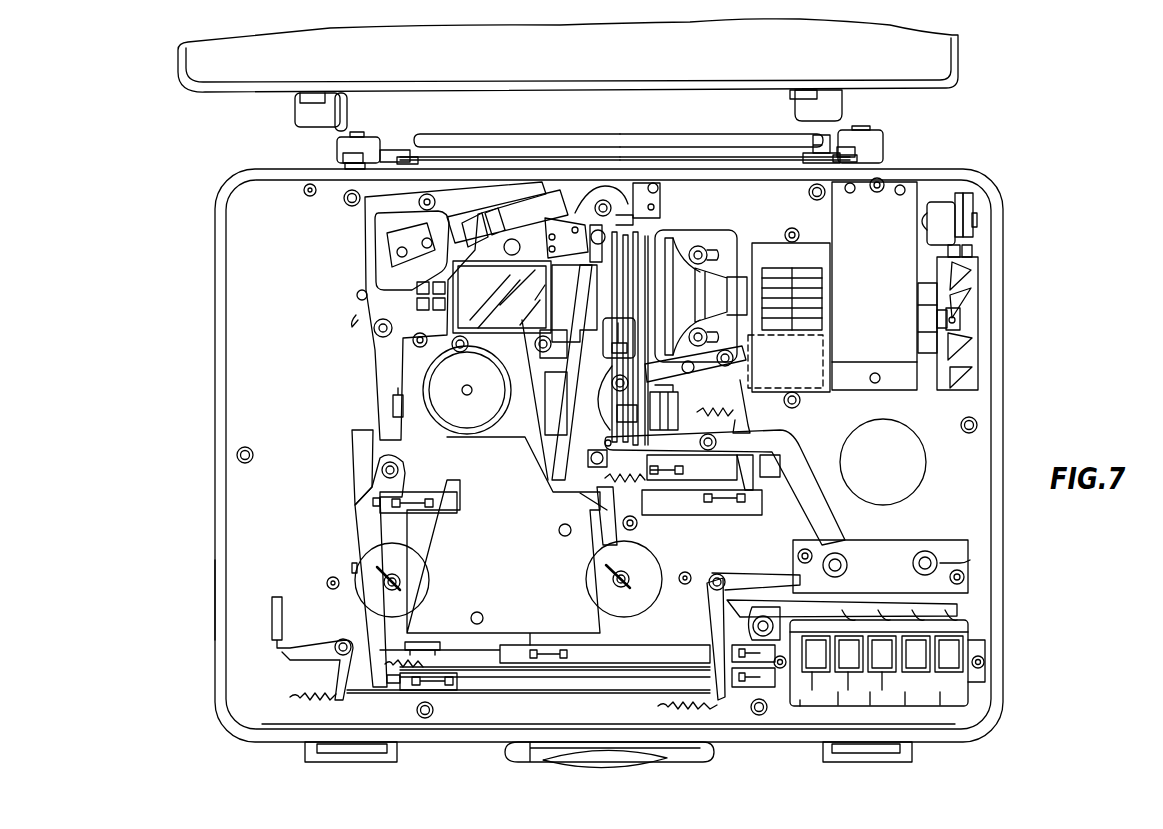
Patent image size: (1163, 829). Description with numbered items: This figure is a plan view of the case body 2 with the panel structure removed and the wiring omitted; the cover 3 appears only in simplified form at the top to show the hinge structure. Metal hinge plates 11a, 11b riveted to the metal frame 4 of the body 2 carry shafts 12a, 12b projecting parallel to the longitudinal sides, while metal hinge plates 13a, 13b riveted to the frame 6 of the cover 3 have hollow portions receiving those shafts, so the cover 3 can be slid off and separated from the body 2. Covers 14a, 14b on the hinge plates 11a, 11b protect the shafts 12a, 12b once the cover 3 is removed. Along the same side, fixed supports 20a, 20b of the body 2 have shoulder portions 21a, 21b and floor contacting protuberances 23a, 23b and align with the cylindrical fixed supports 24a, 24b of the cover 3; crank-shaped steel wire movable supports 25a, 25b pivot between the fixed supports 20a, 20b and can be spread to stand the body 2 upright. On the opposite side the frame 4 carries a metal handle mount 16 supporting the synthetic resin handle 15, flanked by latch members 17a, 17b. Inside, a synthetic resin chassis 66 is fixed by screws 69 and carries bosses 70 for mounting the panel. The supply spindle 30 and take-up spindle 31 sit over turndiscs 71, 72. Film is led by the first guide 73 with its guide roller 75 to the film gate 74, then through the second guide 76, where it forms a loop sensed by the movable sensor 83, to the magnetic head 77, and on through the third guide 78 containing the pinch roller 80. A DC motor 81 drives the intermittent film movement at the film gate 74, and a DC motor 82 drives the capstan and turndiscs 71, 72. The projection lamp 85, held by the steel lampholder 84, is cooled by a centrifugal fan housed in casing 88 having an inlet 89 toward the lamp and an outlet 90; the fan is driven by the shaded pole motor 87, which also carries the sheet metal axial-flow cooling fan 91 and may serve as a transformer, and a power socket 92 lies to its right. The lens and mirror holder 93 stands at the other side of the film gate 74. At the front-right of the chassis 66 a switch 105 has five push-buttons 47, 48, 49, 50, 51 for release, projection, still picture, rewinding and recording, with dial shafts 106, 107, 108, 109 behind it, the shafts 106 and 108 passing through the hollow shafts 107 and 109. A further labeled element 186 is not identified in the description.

The body 2 is at (213, 418).
The cover 3 is at (176, 50).
The metal frame 4 is at (213, 598).
The frame 6 is at (203, 92).
The hinge plate 11a is at (408, 160).
The hinge plate 11b is at (842, 158).
The shaft 12a is at (346, 166).
The shaft 12b is at (858, 158).
The hinge plate 13a is at (312, 92).
The hinge plate 13b is at (797, 90).
The cover 14a is at (345, 157).
The cover 14b is at (850, 150).
The handle 15 is at (590, 769).
The handle mount 16 is at (654, 765).
The latch member 17a is at (372, 762).
The latch member 17b is at (886, 751).
The fixed support 20a is at (360, 138).
The fixed support 20b is at (860, 130).
The shoulder portion 21a is at (388, 155).
The shoulder portion 21b is at (822, 140).
The floor contacting protuberance 23a is at (363, 132).
The floor contacting protuberance 23b is at (862, 126).
The fixed support 24a is at (345, 132).
The fixed support 24b is at (800, 116).
The movable support 25a is at (562, 134).
The movable support 25b is at (655, 157).
The supply spindle 30 is at (613, 580).
The take-up spindle 31 is at (402, 583).
The push-button 47 is at (818, 690).
The push-button 48 is at (852, 690).
The push-button 49 is at (888, 690).
The push-button 50 is at (940, 630).
The push-button 51 is at (950, 655).
The chassis 66 is at (235, 334).
The screw 69 is at (350, 206).
The boss 70 is at (304, 198).
The turndisc 71 is at (640, 572).
The turndisc 72 is at (368, 553).
The first guide 73 is at (612, 390).
The film gate 74 is at (665, 225).
The guide roller 75 is at (612, 385).
The second guide 76 is at (590, 200).
The magnetic head 77 is at (594, 338).
The third guide 78 is at (372, 280).
The pinch roller 80 is at (475, 262).
The DC motor 81 is at (550, 382).
The DC motor 82 is at (448, 410).
The movable sensor 83 is at (640, 205).
The lampholder 84 is at (690, 238).
The projection lamp 85 is at (713, 285).
The shaded pole motor 87 is at (900, 367).
The casing 88 is at (820, 385).
The inlet 89 is at (745, 370).
The outlet 90 is at (775, 243).
The axial-flow cooling fan 91 is at (962, 292).
The socket 92 is at (940, 202).
The lens and mirror holder 93 is at (483, 352).
The switch 105 is at (800, 700).
The shaft 106 is at (840, 552).
The shaft 107 is at (847, 568).
The shaft 108 is at (933, 555).
The shaft 109 is at (970, 560).
The grille 186 is at (810, 274).